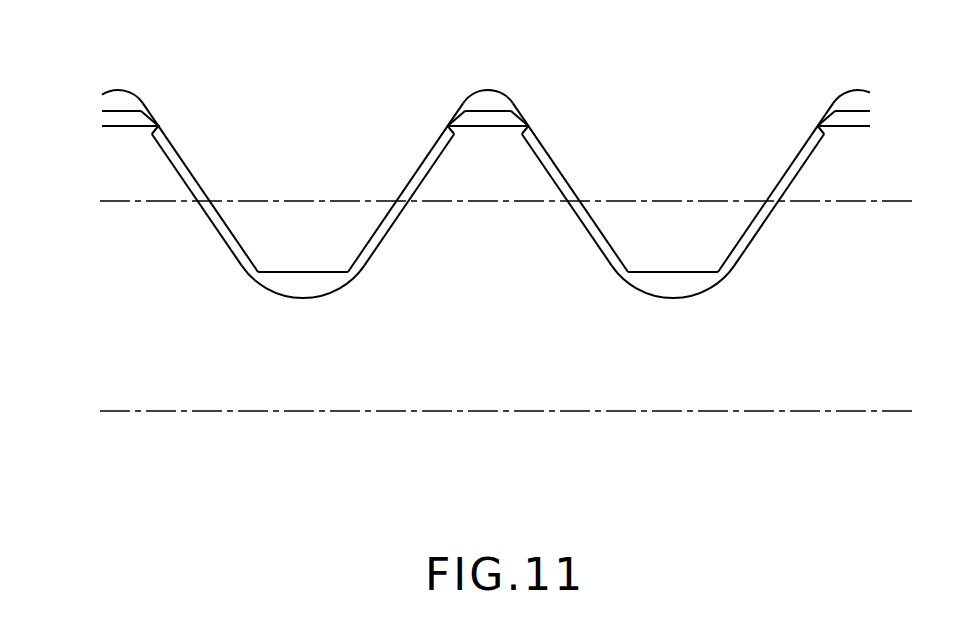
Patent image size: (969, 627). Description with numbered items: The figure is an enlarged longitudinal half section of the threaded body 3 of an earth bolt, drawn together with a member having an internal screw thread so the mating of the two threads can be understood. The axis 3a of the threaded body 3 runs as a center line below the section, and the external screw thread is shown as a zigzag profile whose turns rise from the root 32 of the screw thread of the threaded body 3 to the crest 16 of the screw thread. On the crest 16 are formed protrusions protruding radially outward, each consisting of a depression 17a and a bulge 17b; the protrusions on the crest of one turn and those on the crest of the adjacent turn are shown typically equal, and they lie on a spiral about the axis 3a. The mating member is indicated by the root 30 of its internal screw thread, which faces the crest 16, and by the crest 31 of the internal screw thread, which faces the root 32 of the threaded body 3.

The threaded body 3 is at (246, 348).
The axis of the threaded body 3a is at (632, 413).
The crest of the screw thread 16 is at (110, 112).
The depression 17a is at (140, 111).
The bulge 17b is at (158, 131).
The root of the internal screw thread 30 is at (116, 92).
The crest of the internal screw thread 31 is at (332, 273).
The root of the screw thread 32 is at (293, 298).